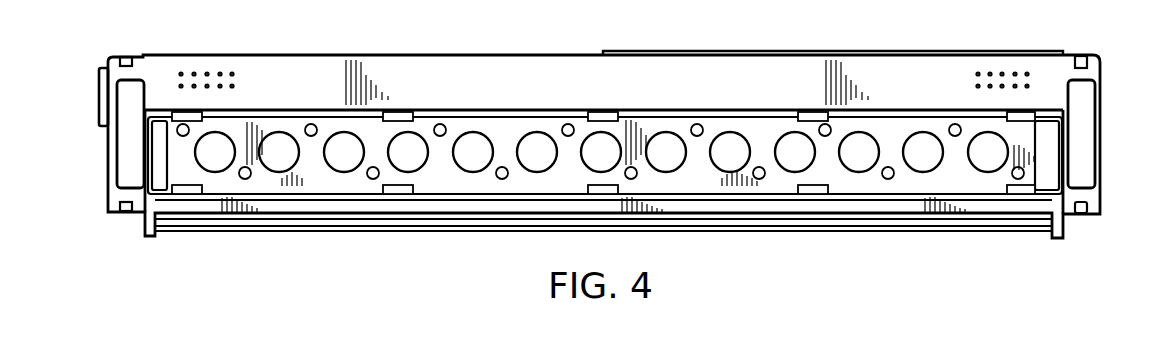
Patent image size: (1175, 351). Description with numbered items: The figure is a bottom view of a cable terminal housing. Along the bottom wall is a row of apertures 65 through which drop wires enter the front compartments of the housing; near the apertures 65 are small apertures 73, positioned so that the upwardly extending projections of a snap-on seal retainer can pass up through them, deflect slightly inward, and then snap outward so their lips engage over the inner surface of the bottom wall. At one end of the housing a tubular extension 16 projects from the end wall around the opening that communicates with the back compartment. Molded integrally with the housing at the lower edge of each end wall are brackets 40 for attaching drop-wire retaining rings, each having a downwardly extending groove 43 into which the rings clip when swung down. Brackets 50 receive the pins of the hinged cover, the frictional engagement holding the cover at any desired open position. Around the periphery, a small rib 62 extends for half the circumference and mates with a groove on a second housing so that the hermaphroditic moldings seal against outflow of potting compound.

The tubular extension 16 is at (100, 72).
The bracket 40 is at (112, 160).
The groove 43 is at (1081, 58).
The bracket 50 is at (153, 233).
The rib 62 is at (893, 54).
The aperture 65 is at (344, 172).
The aperture 73 is at (215, 118).